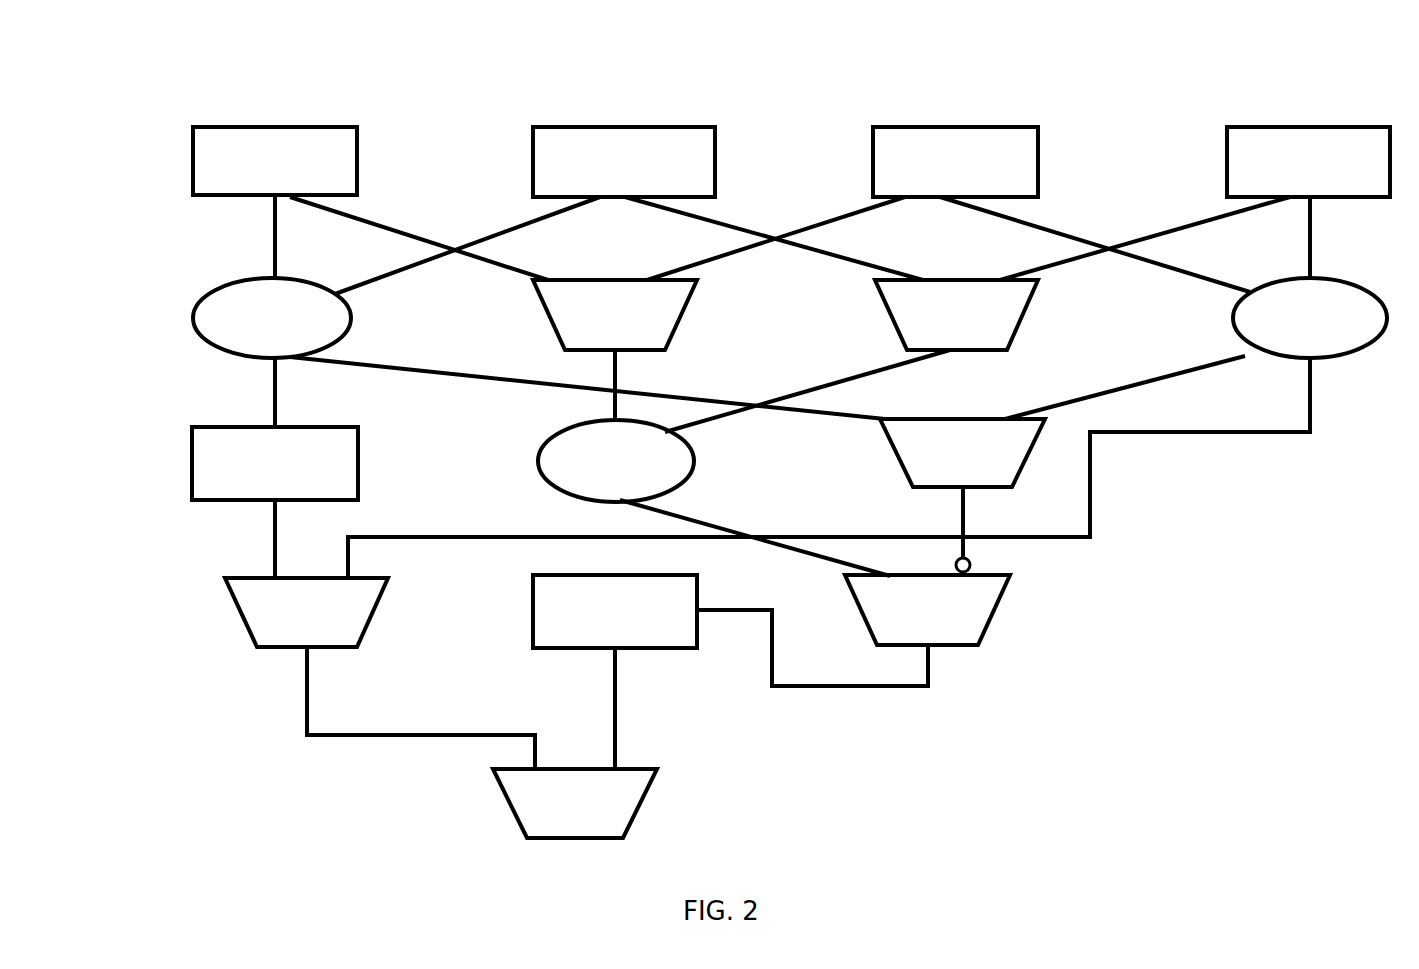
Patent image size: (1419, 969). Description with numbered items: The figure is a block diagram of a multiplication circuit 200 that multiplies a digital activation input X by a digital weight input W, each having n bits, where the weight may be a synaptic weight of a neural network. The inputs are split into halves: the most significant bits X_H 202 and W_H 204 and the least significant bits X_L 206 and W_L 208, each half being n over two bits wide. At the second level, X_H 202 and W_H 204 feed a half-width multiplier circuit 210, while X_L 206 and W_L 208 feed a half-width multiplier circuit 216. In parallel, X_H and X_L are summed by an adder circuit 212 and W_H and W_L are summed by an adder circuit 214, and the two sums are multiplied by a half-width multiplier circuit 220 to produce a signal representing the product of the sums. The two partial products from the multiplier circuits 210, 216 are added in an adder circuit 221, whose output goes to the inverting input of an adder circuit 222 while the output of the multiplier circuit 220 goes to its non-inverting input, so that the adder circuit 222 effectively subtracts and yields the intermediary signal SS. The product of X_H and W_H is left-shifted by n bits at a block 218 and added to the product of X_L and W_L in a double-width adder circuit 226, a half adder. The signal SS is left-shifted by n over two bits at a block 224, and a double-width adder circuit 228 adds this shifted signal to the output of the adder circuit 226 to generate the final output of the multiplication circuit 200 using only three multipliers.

The multiplication circuit 200 is at (170, 63).
The X_H input 202 is at (257, 127).
The W_H input 204 is at (613, 127).
The X_L input 206 is at (958, 127).
The W_L input 208 is at (1300, 127).
The n/2 bit multiplier circuit 210 is at (213, 292).
The adder circuit 212 is at (548, 320).
The adder circuit 214 is at (893, 300).
The n/2 bit multiplier circuit 216 is at (1235, 318).
The left-shift block 218 is at (347, 482).
The n/2 bit multiplier circuit 220 is at (693, 468).
The adder circuit 221 is at (1022, 450).
The adder circuit 222 is at (998, 605).
The left-shift block 224 is at (663, 650).
The 2n bit adder circuit 226 is at (240, 617).
The 2n bit adder circuit 228 is at (635, 798).